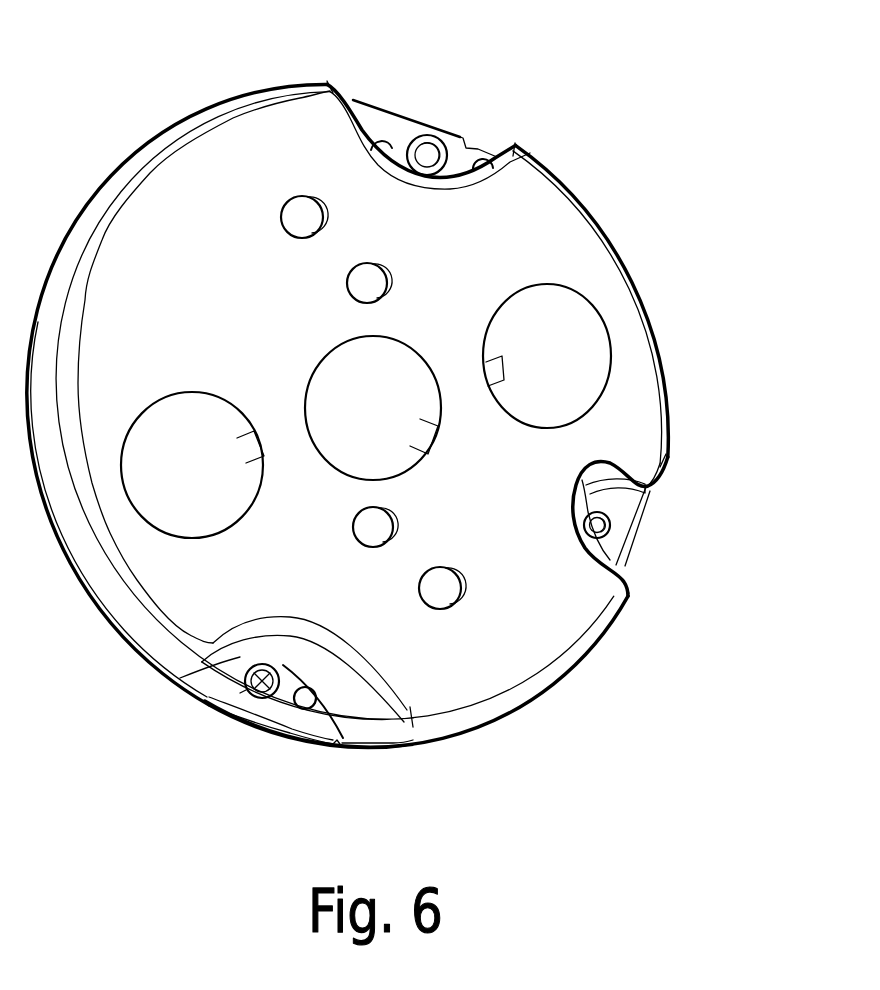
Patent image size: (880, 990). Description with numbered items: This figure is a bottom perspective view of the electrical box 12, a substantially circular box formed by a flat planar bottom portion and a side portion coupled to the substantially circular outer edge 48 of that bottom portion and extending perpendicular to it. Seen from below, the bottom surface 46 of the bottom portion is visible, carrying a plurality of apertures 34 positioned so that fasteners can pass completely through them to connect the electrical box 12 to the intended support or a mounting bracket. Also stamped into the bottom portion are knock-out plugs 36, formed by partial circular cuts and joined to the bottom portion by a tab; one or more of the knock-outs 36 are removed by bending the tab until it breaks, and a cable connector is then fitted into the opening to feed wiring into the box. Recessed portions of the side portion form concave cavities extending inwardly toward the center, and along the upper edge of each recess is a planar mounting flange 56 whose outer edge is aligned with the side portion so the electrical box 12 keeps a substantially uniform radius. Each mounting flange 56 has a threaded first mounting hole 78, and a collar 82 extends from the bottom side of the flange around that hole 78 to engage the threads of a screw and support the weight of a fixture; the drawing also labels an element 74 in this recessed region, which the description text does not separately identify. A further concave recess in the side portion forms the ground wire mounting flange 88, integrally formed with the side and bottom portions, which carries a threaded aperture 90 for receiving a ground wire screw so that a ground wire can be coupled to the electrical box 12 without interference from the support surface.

The electrical box 12 is at (596, 126).
The apertures 34 is at (300, 212).
The knock-out plugs 36 is at (583, 347).
The bottom surface 46 is at (640, 434).
The outer edge 48 is at (557, 665).
The mounting flange 56 is at (400, 120).
The mounting tab 74 is at (350, 690).
The first mounting hole 78 is at (242, 692).
The collar 82 is at (262, 700).
The ground wire mounting flange 88 is at (627, 512).
The threaded aperture 90 is at (610, 533).